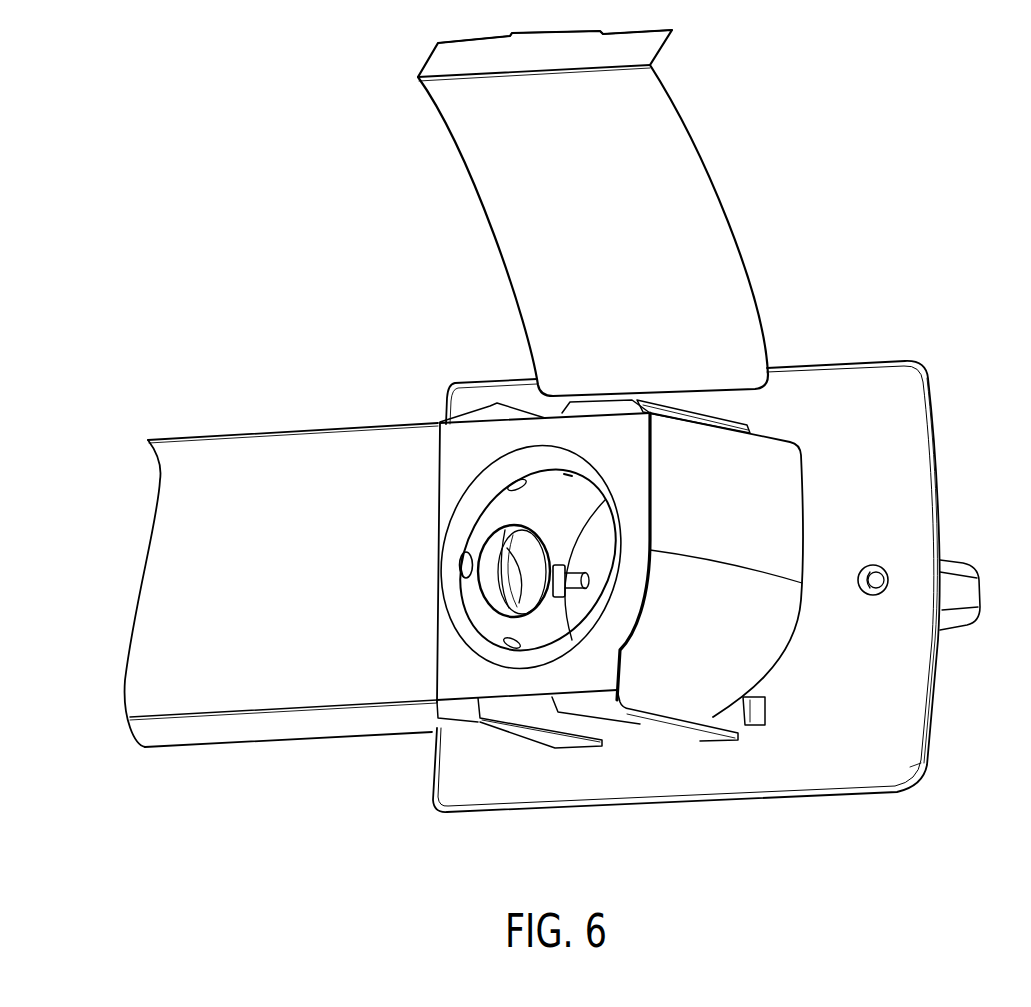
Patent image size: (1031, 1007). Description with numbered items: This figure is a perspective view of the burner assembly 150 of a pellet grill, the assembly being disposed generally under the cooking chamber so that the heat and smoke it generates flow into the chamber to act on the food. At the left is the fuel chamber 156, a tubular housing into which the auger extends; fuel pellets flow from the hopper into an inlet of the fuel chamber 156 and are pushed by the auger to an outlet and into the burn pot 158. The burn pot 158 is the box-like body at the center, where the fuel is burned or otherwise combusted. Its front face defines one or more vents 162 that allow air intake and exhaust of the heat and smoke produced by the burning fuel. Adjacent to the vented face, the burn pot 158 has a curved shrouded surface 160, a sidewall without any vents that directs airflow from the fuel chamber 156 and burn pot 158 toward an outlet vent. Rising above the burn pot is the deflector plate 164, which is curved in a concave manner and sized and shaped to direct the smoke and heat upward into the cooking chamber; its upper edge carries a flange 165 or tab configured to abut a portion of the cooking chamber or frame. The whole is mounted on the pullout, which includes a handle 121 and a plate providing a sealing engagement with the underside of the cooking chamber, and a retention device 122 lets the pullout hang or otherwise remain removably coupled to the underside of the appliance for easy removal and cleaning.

The burner assembly 150 is at (434, 832).
The retention device 122 is at (872, 385).
The handle 121 is at (963, 590).
The fuel chamber 156 is at (304, 582).
The deflector plate 164 is at (582, 233).
The flange 165 is at (650, 45).
The burn pot 158 is at (605, 456).
The shrouded surface 160 is at (707, 612).
The vents 162 is at (457, 566).